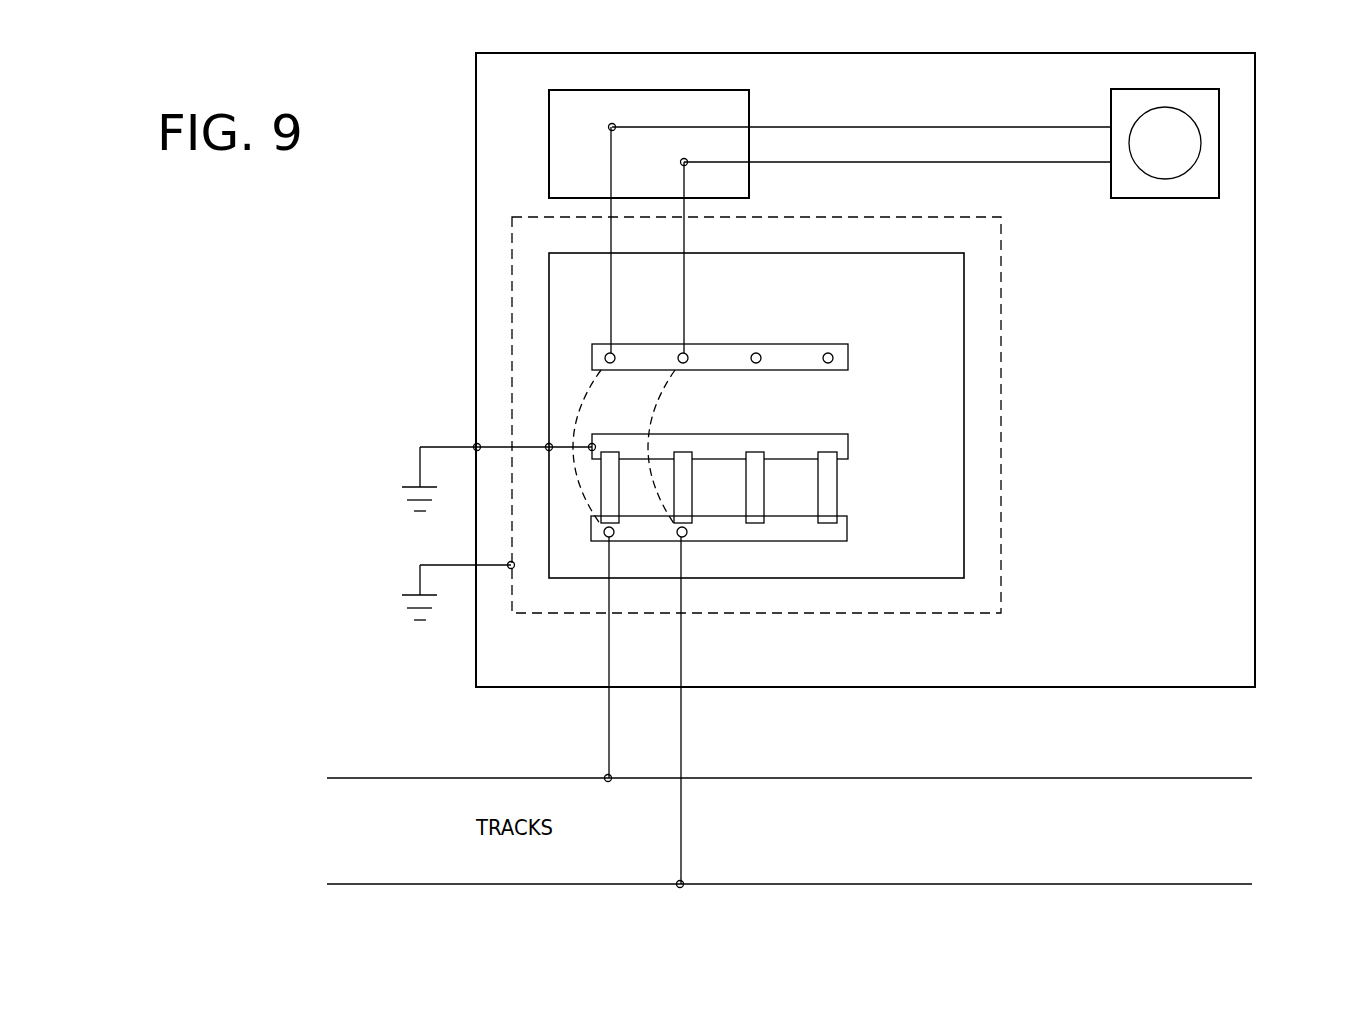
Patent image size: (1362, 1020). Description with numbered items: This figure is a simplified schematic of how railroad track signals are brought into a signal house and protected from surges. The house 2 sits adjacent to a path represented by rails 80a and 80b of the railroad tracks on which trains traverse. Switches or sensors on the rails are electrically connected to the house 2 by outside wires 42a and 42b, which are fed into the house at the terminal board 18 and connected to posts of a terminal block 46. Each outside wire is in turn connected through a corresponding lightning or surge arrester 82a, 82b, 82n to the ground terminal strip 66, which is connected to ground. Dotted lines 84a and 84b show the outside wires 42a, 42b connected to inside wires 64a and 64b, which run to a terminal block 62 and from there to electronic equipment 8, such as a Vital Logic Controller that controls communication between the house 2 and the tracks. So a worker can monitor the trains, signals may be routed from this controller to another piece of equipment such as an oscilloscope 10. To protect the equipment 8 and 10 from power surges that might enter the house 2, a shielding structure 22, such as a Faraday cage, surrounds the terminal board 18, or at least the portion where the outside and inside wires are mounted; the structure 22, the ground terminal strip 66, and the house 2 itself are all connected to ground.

The house 2 is at (1255, 298).
The electronic equipment 8 is at (750, 107).
The oscilloscope 10 is at (1182, 89).
The terminal board 18 is at (941, 382).
The shielding structure 22 is at (1001, 392).
The outside wire 42a is at (608, 733).
The outside wire 42b is at (681, 733).
The terminal block 46 is at (847, 525).
The terminal block 62 is at (802, 344).
The inside wire 64a is at (610, 287).
The inside wire 64b is at (684, 287).
The ground terminal strip 66 is at (820, 434).
The rail 80a is at (407, 778).
The rail 80b is at (415, 884).
The lightning or surge arrester 82a is at (600, 483).
The lightning or surge arrester 82b is at (692, 487).
The lightning or surge arrester 82n is at (837, 483).
The dotted line 84a is at (583, 397).
The dotted line 84b is at (660, 395).